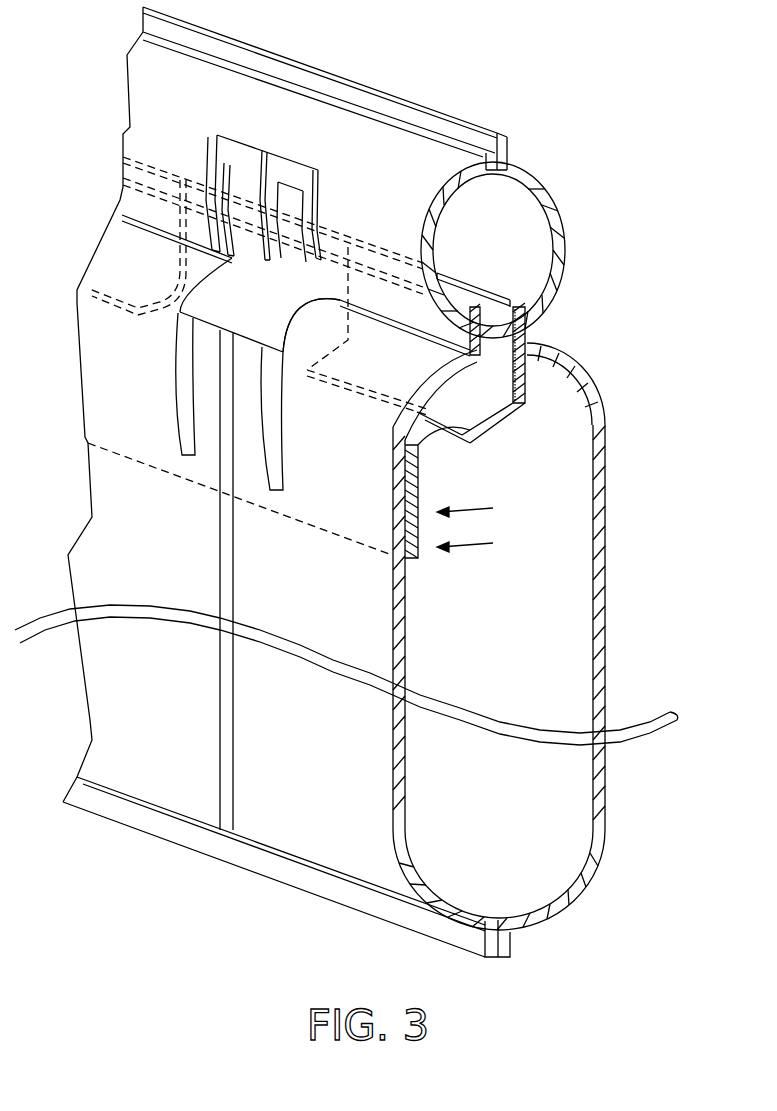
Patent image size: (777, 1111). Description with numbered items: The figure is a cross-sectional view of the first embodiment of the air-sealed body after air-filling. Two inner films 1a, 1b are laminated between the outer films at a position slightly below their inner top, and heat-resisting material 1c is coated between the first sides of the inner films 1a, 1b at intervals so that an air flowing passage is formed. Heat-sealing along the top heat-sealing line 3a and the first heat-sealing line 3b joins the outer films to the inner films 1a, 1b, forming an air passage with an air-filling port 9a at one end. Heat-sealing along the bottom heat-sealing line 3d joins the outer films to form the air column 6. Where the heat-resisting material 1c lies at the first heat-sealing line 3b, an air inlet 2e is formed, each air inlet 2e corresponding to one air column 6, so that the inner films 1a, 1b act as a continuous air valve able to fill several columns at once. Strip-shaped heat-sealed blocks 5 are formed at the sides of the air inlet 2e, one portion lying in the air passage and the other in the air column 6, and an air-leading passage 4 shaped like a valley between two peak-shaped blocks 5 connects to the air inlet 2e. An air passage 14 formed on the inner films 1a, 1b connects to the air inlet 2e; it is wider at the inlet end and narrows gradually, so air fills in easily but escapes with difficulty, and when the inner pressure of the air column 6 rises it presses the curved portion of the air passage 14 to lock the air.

The top heat-sealing line 3a is at (155, 41).
The heat-sealed block 5 is at (257, 160).
The air-leading passage 4 is at (160, 155).
The air-filling port 9a is at (498, 217).
The inner film 1a is at (487, 318).
The air inlet 2e is at (492, 341).
The inner film 1b is at (523, 395).
The air passage 14 is at (427, 437).
The air column 6 is at (513, 620).
The heat-resisting material 1c is at (113, 280).
The first heat-sealing line 3b is at (408, 327).
The bottom heat-sealing line 3d is at (155, 805).